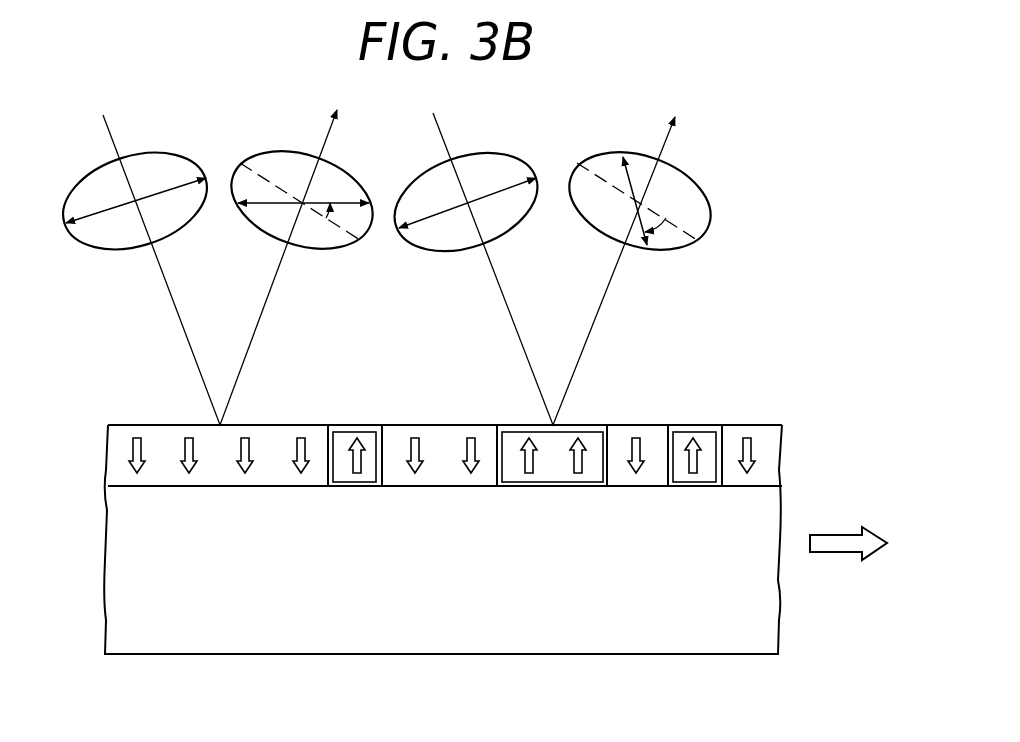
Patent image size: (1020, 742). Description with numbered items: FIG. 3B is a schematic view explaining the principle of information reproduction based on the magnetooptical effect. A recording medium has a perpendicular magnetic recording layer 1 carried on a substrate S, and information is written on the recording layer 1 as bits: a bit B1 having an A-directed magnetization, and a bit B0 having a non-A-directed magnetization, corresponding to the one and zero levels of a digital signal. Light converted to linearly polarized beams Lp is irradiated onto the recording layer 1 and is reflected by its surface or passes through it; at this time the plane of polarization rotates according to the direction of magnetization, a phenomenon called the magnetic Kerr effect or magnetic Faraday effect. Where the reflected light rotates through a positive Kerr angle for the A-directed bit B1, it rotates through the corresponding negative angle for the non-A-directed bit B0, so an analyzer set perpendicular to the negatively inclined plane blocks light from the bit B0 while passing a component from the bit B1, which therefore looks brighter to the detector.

The recording layer 1 is at (772, 476).
The substrate S is at (757, 638).
The linearly polarized beams Lp is at (387, 251).
The bit having non-A-directed magnetization B0 is at (271, 422).
The bit having A-directed magnetization B1 is at (355, 422).